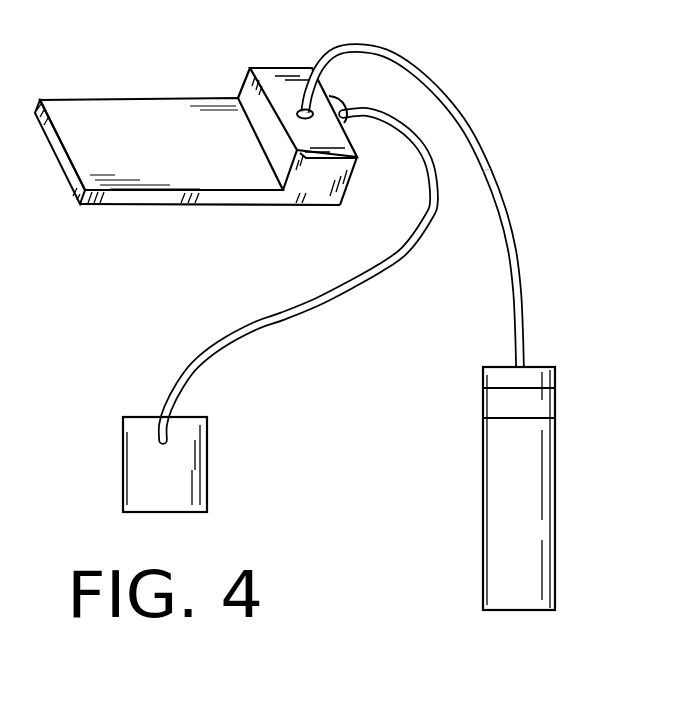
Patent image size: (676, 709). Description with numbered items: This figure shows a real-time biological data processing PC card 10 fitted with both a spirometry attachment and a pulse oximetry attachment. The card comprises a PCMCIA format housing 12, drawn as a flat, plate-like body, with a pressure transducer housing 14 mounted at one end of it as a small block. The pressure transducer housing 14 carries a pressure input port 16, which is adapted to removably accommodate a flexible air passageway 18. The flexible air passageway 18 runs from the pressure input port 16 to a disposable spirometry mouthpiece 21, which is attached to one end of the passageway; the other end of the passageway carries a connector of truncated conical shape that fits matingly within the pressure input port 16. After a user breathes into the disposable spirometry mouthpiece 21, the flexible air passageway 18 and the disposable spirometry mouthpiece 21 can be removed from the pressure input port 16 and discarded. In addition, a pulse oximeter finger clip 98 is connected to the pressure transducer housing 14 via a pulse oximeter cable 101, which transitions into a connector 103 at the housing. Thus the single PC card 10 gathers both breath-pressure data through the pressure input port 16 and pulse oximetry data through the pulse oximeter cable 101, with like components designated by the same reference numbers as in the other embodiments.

The real-time biological data processing PC card 10 is at (160, 210).
The PCMCIA format housing 12 is at (108, 100).
The pressure transducer housing 14 is at (250, 68).
The pressure input port 16 is at (300, 110).
The flexible air passageway 18 is at (523, 313).
The disposable spirometry mouthpiece 21 is at (483, 496).
The pulse oximeter finger clip 98 is at (207, 467).
The pulse oximeter cable 101 is at (297, 303).
The connector 103 is at (346, 118).